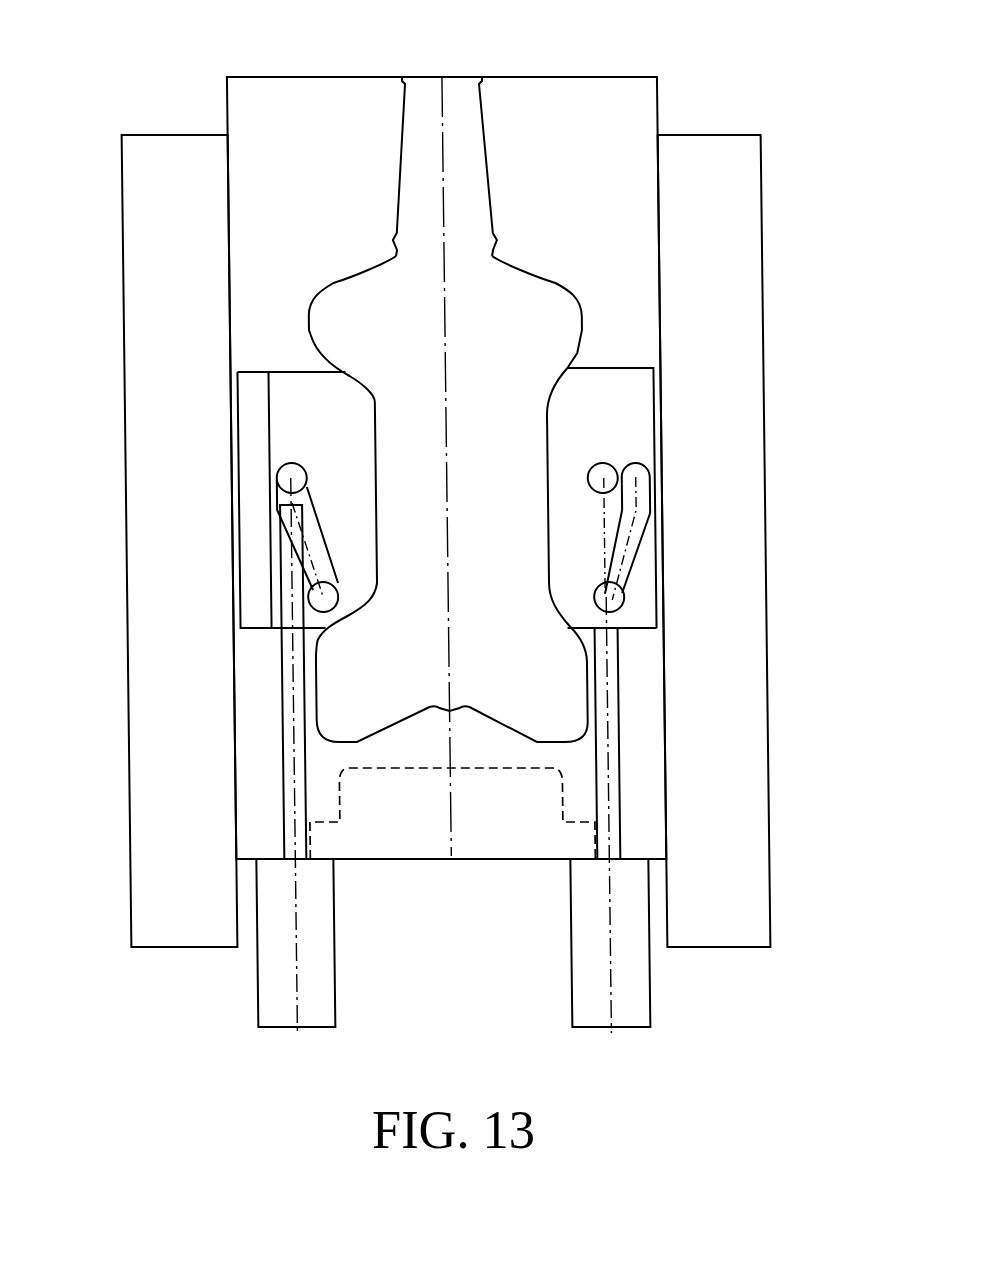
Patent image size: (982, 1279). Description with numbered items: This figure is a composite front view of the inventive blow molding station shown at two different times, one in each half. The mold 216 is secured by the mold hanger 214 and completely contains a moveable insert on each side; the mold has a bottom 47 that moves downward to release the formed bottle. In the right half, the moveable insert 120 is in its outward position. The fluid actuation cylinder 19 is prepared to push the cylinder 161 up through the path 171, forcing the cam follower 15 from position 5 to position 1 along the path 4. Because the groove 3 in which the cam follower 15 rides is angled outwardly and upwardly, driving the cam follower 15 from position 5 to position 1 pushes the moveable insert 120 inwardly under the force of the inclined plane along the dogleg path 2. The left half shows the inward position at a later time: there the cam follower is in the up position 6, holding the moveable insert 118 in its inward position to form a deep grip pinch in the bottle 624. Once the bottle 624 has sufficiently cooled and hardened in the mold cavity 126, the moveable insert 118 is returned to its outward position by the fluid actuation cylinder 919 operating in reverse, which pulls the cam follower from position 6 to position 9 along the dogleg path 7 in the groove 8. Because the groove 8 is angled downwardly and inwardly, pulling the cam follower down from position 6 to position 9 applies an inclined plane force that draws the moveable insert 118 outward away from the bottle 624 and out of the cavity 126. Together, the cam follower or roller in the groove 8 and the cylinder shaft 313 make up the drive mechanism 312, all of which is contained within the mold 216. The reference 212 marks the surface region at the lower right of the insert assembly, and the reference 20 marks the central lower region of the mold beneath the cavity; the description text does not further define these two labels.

The mold 216 is at (261, 77).
The mold hanger 214 is at (193, 135).
The mold cavity 126 is at (399, 77).
The bottle 624 is at (546, 287).
The moveable insert 118 is at (295, 370).
The moveable insert 120 is at (616, 370).
The insert bottom surface 212 is at (629, 632).
The up position 6 is at (271, 468).
The dogleg path 7 is at (289, 548).
The groove 8 is at (295, 573).
The position 9 is at (304, 610).
The drive mechanism 312 is at (300, 650).
The cylinder shaft 313 is at (298, 754).
The fluid actuation cylinder 919 is at (245, 1003).
The fluid actuation cylinder 19 is at (638, 1003).
The central axis 20 is at (442, 830).
The bottom 47 is at (557, 777).
The cylinder 161 is at (610, 702).
The path 171 is at (599, 735).
The cam follower 15 is at (594, 467).
The position 1 is at (605, 462).
The dogleg path 2 is at (630, 497).
The groove 3 is at (643, 528).
The path 4 is at (618, 540).
The position 5 is at (616, 600).